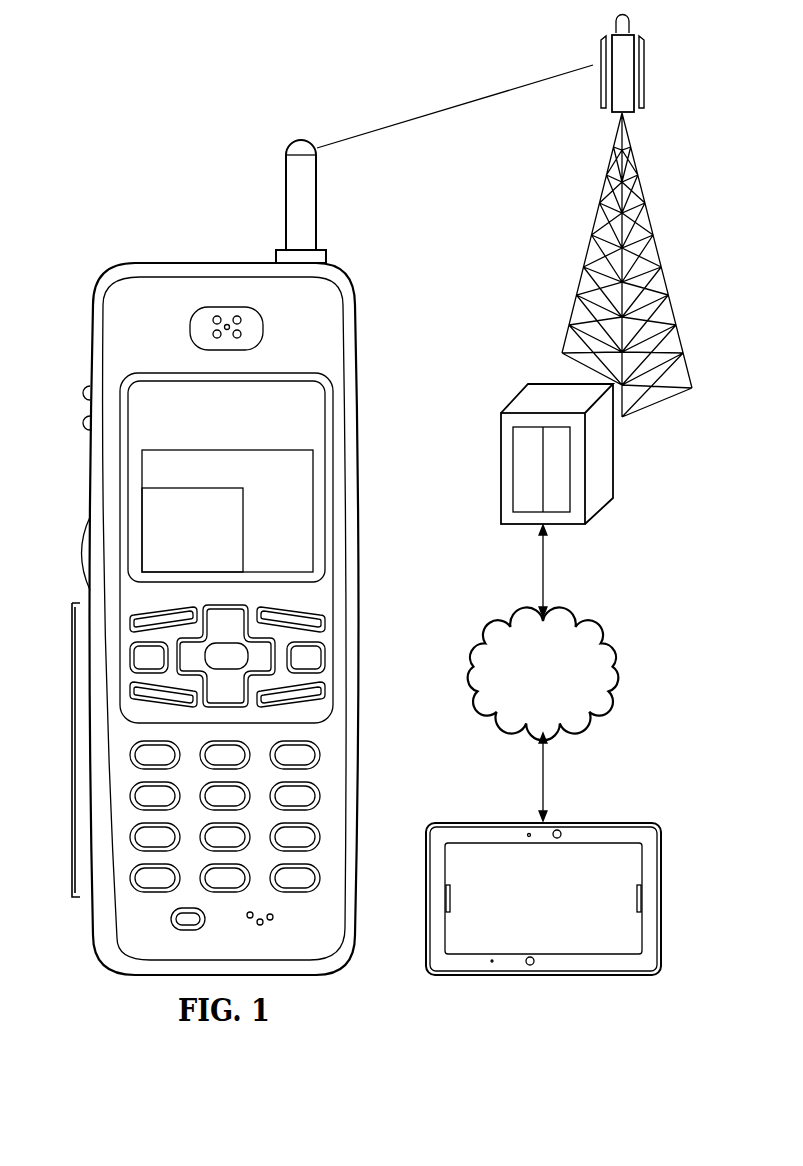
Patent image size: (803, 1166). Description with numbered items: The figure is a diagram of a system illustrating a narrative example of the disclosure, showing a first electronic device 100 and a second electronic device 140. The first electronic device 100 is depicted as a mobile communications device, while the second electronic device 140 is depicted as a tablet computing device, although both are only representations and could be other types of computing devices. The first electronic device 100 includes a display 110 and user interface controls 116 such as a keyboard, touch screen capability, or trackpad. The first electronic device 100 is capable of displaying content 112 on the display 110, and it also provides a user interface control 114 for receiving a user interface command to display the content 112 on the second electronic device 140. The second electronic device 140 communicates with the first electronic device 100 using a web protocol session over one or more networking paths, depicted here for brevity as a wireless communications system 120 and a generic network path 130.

The first electronic device 100 is at (197, 257).
The display 110 is at (160, 378).
The content 112 is at (181, 452).
The user interface control 114 is at (243, 449).
The user interface controls 116 is at (72, 755).
The wireless communications system 120 is at (662, 250).
The generic network path 130 is at (525, 686).
The second electronic device 140 is at (661, 898).